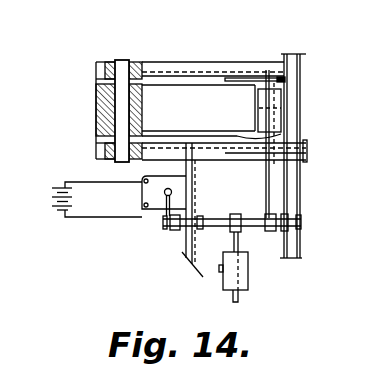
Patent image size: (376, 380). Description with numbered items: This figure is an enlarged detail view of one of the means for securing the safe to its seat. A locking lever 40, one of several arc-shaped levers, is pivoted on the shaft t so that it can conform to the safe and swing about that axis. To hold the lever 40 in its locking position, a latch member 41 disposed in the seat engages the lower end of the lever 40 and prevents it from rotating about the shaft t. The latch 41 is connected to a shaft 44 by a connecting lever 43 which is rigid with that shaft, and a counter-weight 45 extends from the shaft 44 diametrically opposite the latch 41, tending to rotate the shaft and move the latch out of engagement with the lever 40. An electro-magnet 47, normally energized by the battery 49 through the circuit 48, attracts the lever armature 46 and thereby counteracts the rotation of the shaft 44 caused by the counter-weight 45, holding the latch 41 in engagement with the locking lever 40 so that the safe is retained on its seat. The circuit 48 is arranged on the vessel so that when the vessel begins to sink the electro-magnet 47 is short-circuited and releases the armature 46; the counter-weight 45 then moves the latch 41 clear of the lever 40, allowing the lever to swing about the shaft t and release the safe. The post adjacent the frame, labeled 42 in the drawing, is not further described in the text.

The shaft t is at (119, 61).
The levers 40 is at (97, 102).
The latch member 41 is at (276, 105).
The post 42 is at (296, 119).
The connecting lever 43 is at (270, 183).
The shaft 44 is at (226, 222).
The counter-weight 45 is at (243, 278).
The lever armature 46 is at (163, 210).
The electro-magnet 47 is at (140, 193).
The circuit 48 is at (100, 218).
The battery 49 is at (53, 200).